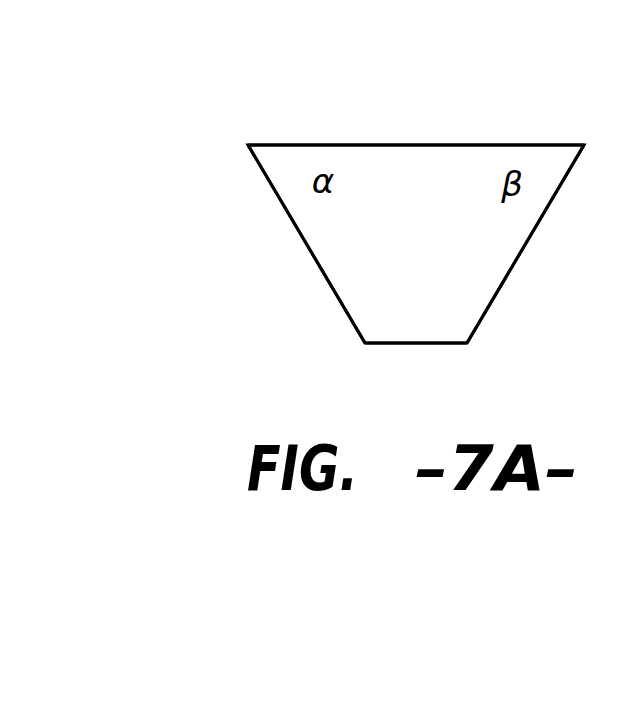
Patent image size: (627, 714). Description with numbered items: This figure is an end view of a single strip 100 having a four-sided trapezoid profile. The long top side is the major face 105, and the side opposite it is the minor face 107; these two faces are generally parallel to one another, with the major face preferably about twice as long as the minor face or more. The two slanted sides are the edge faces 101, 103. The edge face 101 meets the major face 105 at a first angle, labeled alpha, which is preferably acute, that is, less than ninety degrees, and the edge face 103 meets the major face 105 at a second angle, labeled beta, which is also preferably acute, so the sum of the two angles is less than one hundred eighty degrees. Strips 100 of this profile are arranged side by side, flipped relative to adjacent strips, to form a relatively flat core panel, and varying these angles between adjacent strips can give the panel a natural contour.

The strip 100 is at (386, 235).
The edge face 101 is at (288, 219).
The edge face 103 is at (545, 219).
The major face 105 is at (518, 93).
The minor face 107 is at (400, 343).